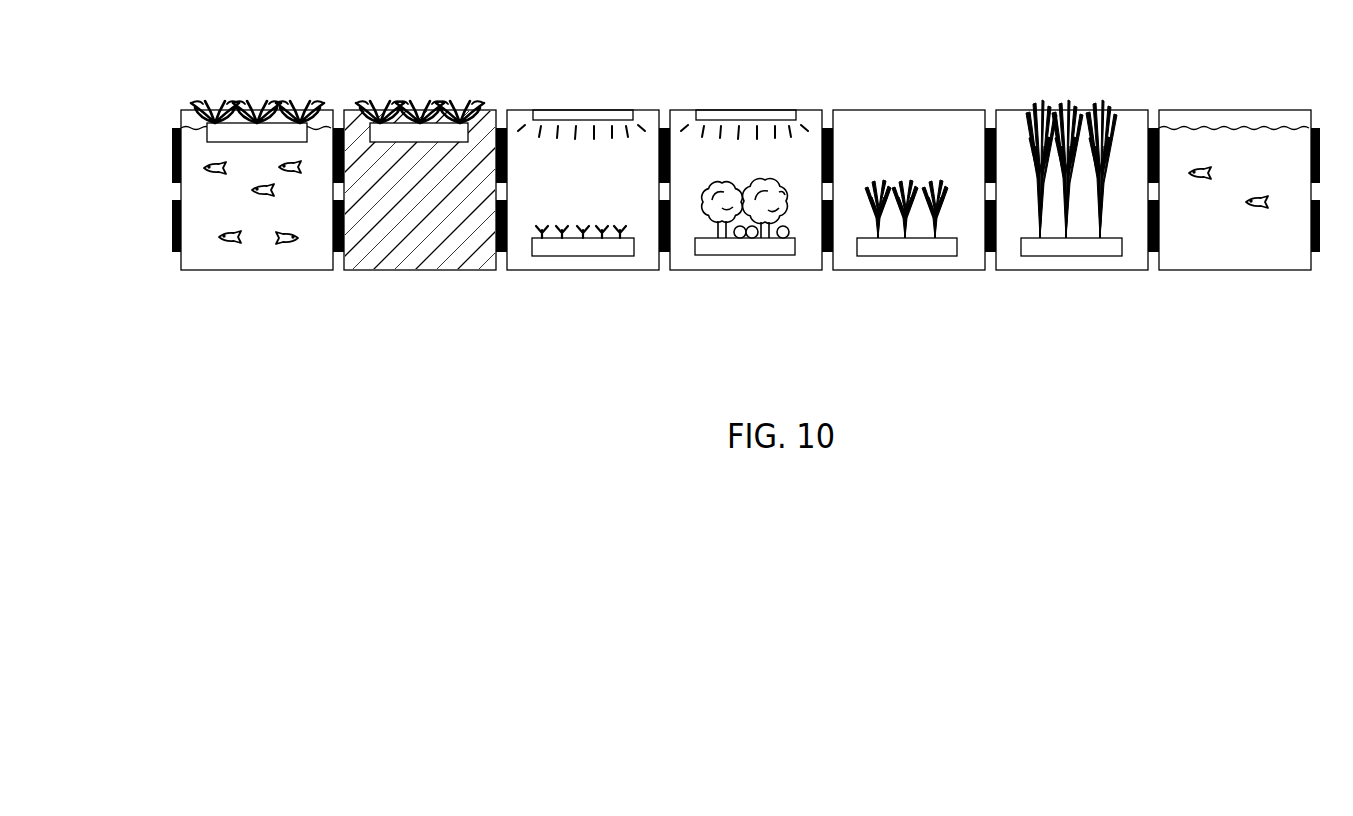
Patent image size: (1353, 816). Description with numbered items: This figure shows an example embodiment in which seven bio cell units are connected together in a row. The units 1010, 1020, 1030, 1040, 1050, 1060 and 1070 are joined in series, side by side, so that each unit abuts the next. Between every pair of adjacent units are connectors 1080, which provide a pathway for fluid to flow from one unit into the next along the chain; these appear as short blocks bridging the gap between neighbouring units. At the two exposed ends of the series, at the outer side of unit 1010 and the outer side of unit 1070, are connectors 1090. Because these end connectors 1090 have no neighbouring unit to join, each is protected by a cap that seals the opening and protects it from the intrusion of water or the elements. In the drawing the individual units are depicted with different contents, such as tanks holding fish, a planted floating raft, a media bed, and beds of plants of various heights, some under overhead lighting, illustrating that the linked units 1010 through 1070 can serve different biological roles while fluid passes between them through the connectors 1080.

The bio cell unit 1010 is at (332, 118).
The bio cell unit 1020 is at (488, 123).
The bio cell unit 1030 is at (648, 126).
The bio cell unit 1040 is at (812, 125).
The bio cell unit 1050 is at (968, 122).
The bio cell unit 1060 is at (1125, 122).
The bio cell unit 1070 is at (1238, 118).
The connector 1080 is at (827, 256).
The end connector 1090 is at (173, 238).